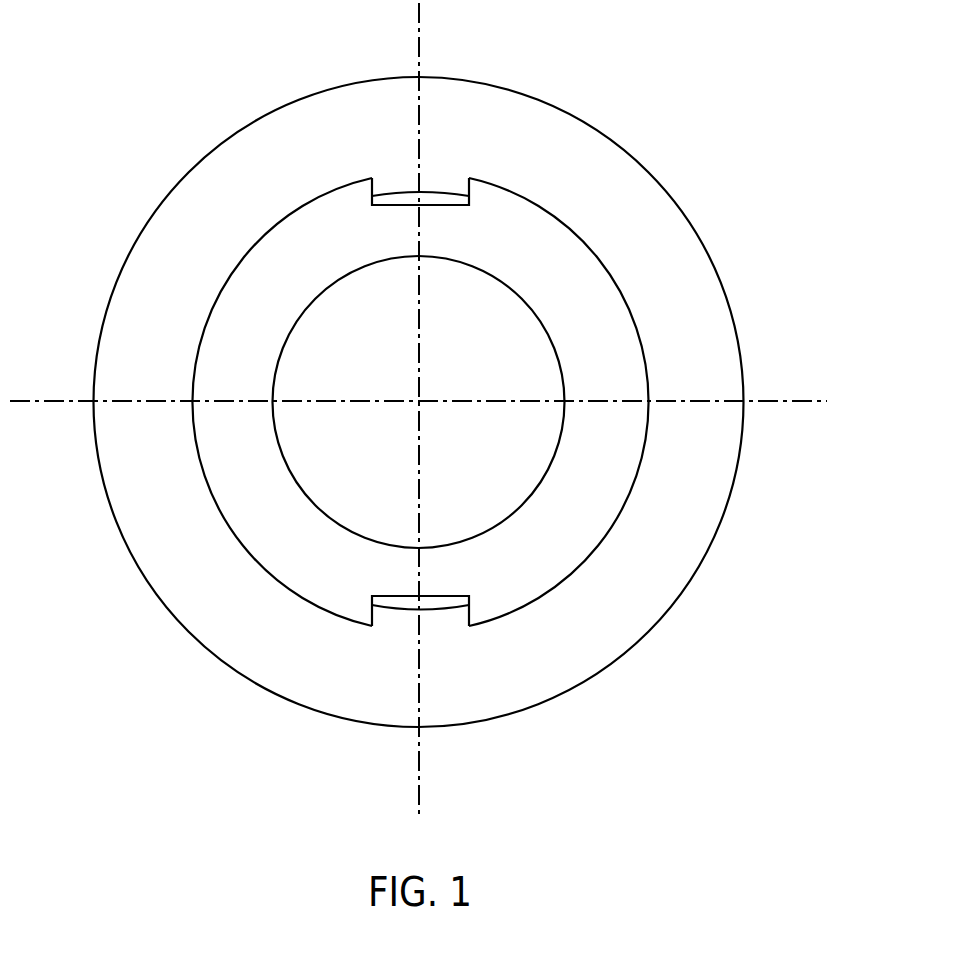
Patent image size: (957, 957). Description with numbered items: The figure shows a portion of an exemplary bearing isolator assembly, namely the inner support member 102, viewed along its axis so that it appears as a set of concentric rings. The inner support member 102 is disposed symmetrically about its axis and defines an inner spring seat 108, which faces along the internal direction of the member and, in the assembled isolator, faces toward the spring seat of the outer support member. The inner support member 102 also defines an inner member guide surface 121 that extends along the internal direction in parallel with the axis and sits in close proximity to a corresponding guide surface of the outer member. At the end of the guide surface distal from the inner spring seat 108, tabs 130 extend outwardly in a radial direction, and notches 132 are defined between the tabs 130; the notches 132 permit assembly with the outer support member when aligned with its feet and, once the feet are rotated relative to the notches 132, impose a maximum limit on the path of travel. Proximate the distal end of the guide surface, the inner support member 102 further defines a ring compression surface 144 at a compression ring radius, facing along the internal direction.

The inner support member 102 is at (112, 160).
The inner spring seat 108 is at (218, 616).
The inner member guide surface 121 is at (597, 555).
The tabs 130 is at (568, 227).
The notches 132 is at (428, 186).
The ring compression surface 144 is at (320, 595).